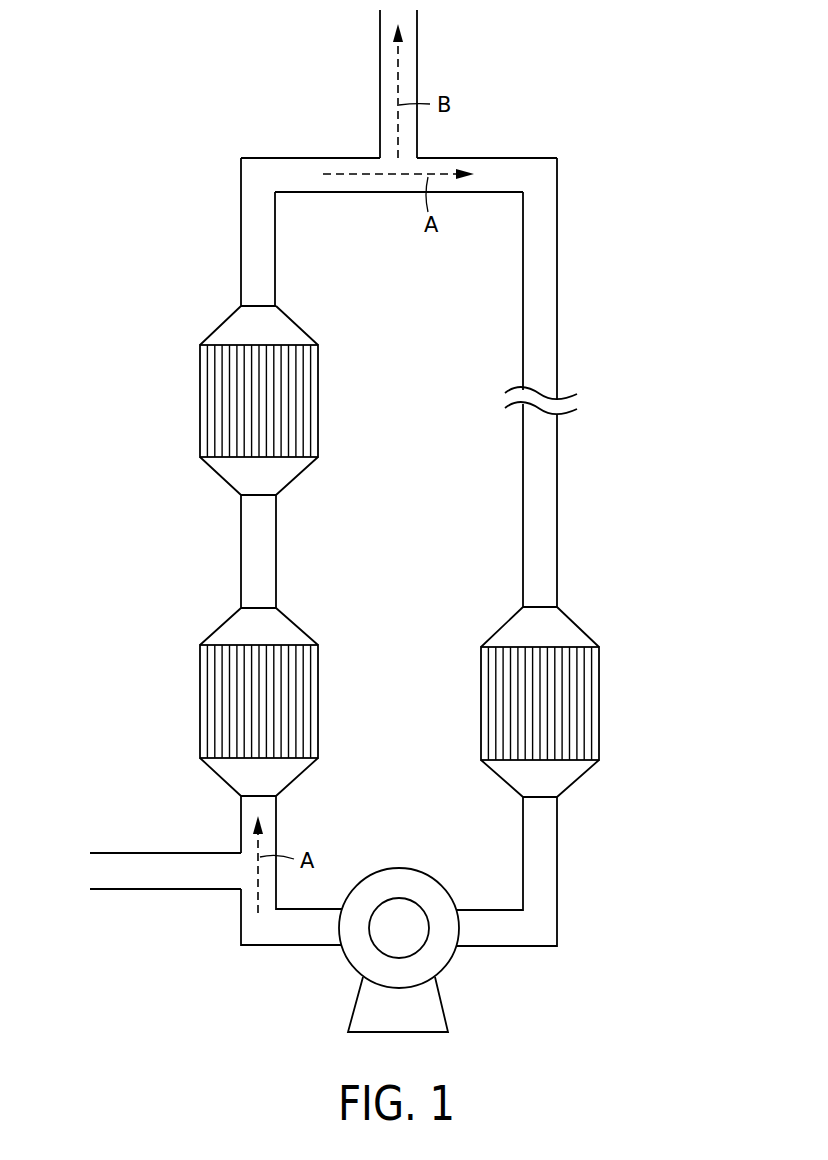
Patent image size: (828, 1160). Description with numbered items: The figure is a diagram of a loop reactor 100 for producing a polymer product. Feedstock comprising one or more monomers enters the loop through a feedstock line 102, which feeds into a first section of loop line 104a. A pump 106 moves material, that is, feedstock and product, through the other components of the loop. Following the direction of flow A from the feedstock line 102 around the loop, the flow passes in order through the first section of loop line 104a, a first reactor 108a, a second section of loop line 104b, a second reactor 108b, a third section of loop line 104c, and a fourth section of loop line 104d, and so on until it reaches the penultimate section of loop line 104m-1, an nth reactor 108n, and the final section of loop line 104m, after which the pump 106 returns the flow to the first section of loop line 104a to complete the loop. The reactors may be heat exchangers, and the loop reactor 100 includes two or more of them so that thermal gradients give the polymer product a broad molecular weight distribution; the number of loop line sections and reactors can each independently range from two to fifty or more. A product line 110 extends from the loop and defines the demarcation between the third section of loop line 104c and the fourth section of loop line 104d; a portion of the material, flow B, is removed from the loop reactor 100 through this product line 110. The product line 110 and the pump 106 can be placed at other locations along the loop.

The loop reactor 100 is at (158, 59).
The feedstock line 102 is at (134, 891).
The first section of loop line 104a is at (265, 947).
The second section of loop line 104b is at (241, 551).
The third section of loop line 104c is at (338, 194).
The fourth section of loop line 104d is at (558, 232).
The mth section of loop line 104m is at (558, 844).
The mth-1 section of loop line 104m-1 is at (558, 552).
The pump 106 is at (447, 1003).
The first reactor 108a is at (199, 702).
The second reactor 108b is at (200, 402).
The nth reactor 108n is at (573, 623).
The product line 110 is at (380, 61).